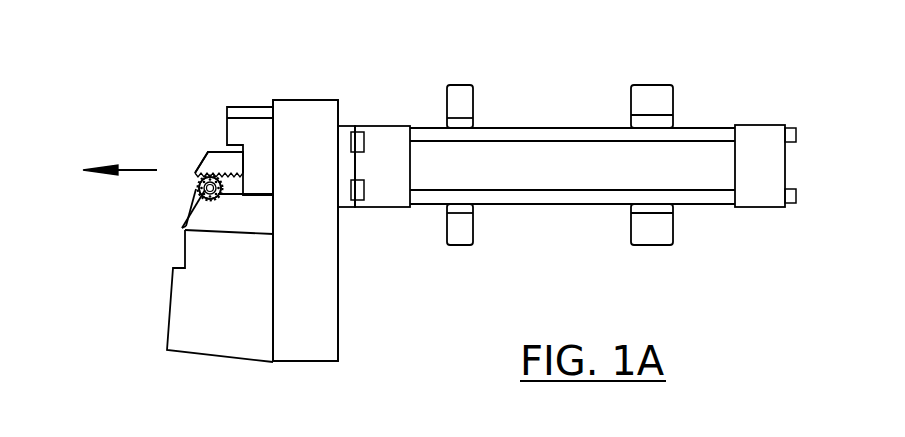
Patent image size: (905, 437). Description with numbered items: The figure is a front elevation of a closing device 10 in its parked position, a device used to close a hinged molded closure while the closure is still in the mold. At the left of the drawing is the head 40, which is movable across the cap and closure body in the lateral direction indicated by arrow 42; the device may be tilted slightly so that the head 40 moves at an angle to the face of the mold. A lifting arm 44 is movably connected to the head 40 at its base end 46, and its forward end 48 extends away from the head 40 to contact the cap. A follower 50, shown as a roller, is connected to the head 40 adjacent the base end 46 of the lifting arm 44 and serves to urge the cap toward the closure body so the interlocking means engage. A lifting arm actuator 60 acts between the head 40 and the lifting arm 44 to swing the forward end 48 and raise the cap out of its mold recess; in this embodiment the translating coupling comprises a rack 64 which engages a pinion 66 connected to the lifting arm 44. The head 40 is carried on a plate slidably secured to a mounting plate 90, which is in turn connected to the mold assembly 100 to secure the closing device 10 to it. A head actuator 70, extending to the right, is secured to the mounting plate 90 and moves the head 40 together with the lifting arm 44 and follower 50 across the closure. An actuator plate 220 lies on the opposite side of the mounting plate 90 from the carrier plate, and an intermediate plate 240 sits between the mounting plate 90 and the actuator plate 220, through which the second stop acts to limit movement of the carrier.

The closing device 10 is at (329, 86).
The head 40 is at (205, 150).
The arrow 42 is at (127, 168).
The lifting arm 44 is at (204, 224).
The base end 46 is at (196, 186).
The forward end 48 is at (183, 223).
The follower 50 is at (214, 200).
The lifting arm actuator 60 is at (184, 160).
The rack 64 is at (206, 183).
The pinion 66 is at (222, 188).
The head actuator 70 is at (724, 226).
The mounting plate 90 is at (313, 330).
The mold assembly 100 is at (228, 323).
The actuator plate 220 is at (653, 233).
The intermediate plate 240 is at (463, 238).